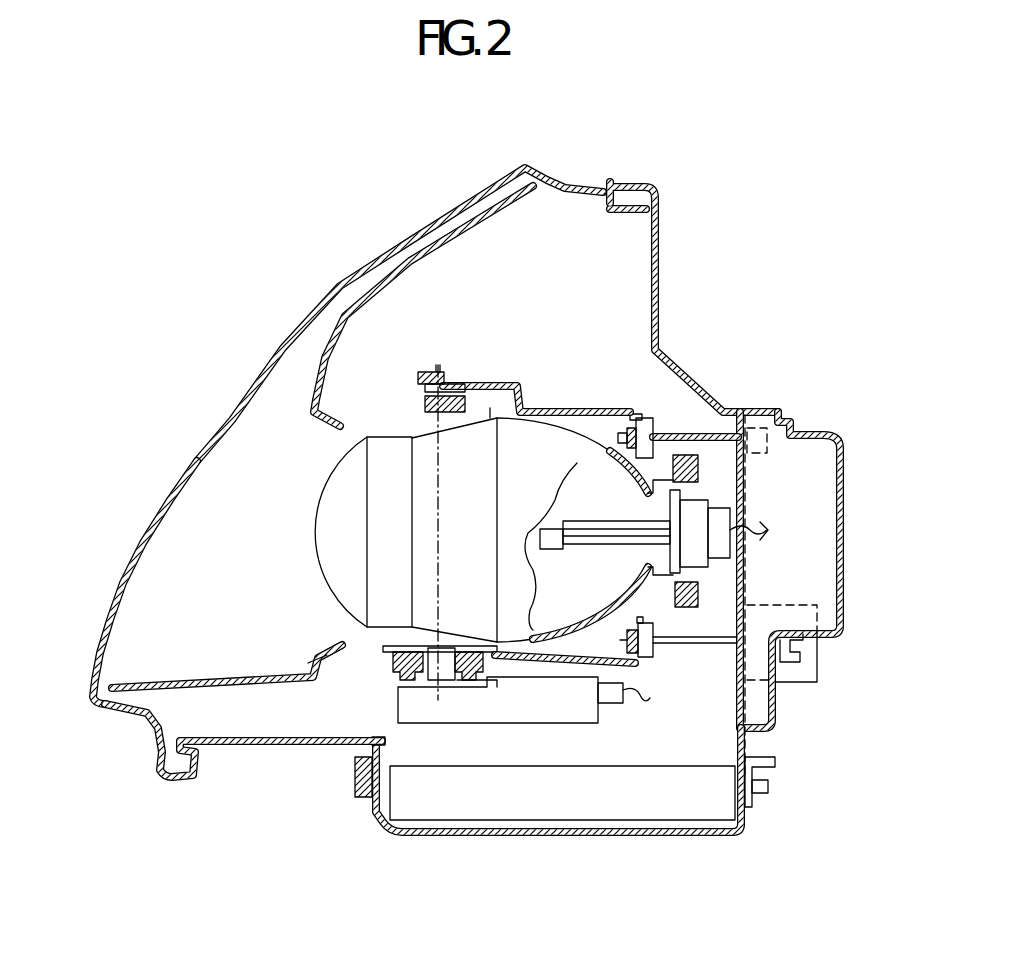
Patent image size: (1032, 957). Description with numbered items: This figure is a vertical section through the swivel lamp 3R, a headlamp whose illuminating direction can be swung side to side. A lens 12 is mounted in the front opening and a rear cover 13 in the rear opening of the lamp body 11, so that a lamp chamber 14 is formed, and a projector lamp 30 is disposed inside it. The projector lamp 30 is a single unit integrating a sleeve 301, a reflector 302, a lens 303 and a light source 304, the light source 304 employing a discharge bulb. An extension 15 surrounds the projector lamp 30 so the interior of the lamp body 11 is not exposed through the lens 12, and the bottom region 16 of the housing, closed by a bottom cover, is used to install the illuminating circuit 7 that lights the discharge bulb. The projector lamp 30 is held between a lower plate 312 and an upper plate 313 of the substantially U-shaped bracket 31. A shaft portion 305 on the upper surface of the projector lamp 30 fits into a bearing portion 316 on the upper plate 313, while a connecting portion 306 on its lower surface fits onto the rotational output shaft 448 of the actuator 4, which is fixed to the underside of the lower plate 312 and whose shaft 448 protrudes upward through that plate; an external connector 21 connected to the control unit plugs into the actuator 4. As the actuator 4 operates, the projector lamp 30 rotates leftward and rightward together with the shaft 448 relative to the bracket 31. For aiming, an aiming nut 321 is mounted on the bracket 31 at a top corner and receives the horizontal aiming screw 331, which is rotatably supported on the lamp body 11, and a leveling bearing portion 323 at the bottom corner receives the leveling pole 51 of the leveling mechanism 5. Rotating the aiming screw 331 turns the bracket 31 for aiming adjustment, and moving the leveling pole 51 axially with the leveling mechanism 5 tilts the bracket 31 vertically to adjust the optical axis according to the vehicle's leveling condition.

The swivel lamp 3R is at (580, 143).
The lamp body 11 is at (658, 279).
The lens 12 is at (347, 283).
The rear cover 13 is at (838, 430).
The lamp chamber 14 is at (192, 598).
The extension 15 is at (273, 680).
The bottom wall of lamp body 16 is at (507, 833).
The illuminating circuit 7 is at (647, 807).
The leveling mechanism 5 is at (800, 672).
The leveling pole 51 is at (703, 644).
The projector lamp 30 is at (294, 521).
The bracket 31 is at (636, 414).
The sleeve 301 is at (488, 478).
The reflector 302 is at (567, 443).
The lens 303 is at (343, 582).
The light source 304 is at (598, 533).
The shaft portion 305 is at (418, 378).
The connecting portion 306 is at (395, 660).
The lower plate 312 is at (532, 668).
The upper plate 313 is at (485, 383).
The bearing portion 316 is at (441, 377).
The aiming nut 321 is at (658, 433).
The leveling bearing portion 323 is at (650, 657).
The horizontal aiming screw 331 is at (720, 437).
The actuator 4 is at (407, 717).
The rotational output shaft 448 is at (445, 677).
The external connector 21 is at (612, 702).